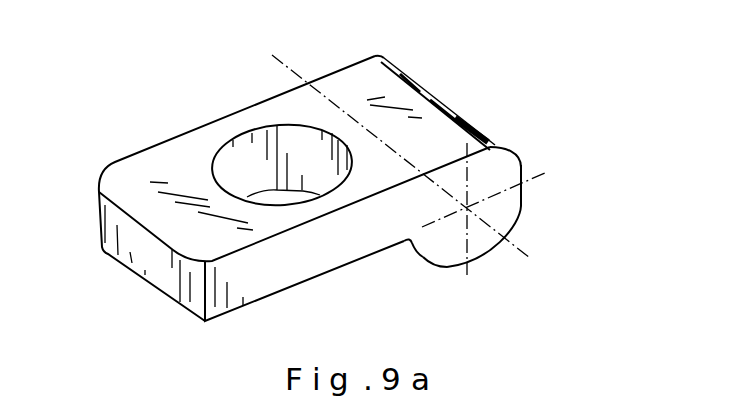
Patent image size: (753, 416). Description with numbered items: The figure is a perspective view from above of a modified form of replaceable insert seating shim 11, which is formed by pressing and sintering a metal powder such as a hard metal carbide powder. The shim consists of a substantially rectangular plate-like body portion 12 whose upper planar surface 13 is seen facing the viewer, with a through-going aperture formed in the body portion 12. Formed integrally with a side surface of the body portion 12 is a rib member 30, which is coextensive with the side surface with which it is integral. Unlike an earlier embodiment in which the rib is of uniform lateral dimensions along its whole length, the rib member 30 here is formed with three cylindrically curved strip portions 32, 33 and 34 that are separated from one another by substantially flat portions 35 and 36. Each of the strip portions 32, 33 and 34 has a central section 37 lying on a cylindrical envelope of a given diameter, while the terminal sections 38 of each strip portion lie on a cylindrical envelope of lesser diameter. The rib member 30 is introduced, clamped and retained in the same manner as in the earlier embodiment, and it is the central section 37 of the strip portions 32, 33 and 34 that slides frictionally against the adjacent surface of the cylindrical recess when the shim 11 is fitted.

The insert seating shim 11 is at (204, 126).
The body portion 12 is at (298, 273).
The upper planar surface 13 is at (135, 182).
The rib member 30 is at (493, 182).
The cylindrically curved strip portion 32 is at (425, 263).
The cylindrically curved strip portion 33 is at (511, 226).
The cylindrically curved strip portion 34 is at (502, 151).
The flat portion 35 is at (475, 258).
The flat portion 36 is at (522, 172).
The central section 37 is at (443, 91).
The terminal section 38 is at (386, 60).